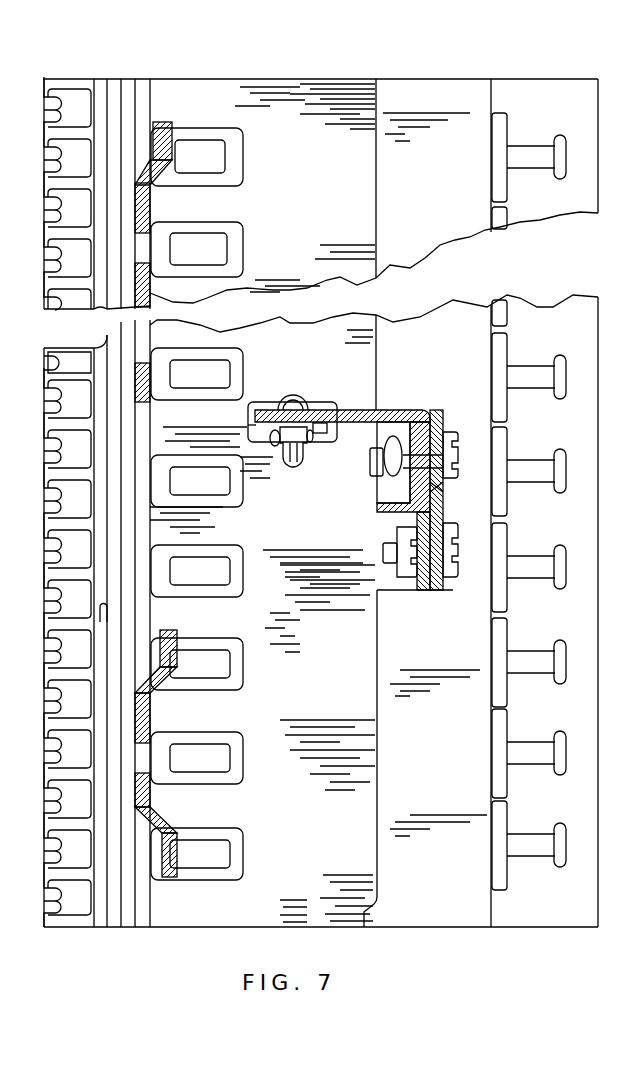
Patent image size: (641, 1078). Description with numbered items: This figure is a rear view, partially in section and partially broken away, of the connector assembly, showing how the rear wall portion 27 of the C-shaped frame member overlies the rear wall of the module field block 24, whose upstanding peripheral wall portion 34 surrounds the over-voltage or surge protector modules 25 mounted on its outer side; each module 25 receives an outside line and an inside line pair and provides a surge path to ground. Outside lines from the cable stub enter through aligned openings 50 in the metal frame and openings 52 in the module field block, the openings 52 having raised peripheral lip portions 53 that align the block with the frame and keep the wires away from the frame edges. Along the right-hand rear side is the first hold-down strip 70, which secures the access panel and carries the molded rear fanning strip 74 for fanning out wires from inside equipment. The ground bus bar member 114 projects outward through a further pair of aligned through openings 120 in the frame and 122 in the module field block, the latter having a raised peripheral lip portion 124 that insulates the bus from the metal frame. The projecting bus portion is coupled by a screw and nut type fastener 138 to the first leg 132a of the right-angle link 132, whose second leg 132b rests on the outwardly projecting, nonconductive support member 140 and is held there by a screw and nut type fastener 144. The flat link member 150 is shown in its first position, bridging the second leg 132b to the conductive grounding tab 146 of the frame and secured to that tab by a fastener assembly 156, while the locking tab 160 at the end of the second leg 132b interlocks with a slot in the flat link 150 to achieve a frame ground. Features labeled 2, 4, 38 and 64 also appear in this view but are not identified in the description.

The heat exchanger assembly 2 is at (384, 745).
The fins 4 is at (38, 223).
The module field block 24 is at (636, 308).
The over-voltage or surge protector modules 25 is at (566, 140).
The rear wall portion 27 is at (330, 686).
The upstanding peripheral wall portion 34 is at (458, 883).
The panel 38 is at (572, 910).
The through aligned openings 50 is at (228, 150).
The through aligned openings 52 is at (206, 142).
The raised peripheral lip portions 53 is at (240, 176).
The support column 64 is at (130, 913).
The first hold-down strip 70 is at (75, 540).
The rear fanning strip 74 is at (42, 528).
The bus bar member 114 is at (250, 423).
The through opening 120 is at (338, 432).
The through opening 122 is at (322, 434).
The raised peripheral lip portion 124 is at (312, 400).
The right-angle link 132 is at (380, 467).
The first leg 132a is at (404, 396).
The second leg 132b is at (443, 417).
The screw and nut type fastener 138 is at (295, 397).
The support member 140 is at (393, 492).
The screw and nut type fastener 144 is at (453, 443).
The grounding tab 146 is at (398, 582).
The flat link member 150 is at (430, 578).
The screw and nut type fastener assembly 156 is at (448, 574).
The locking tab 160 is at (448, 492).